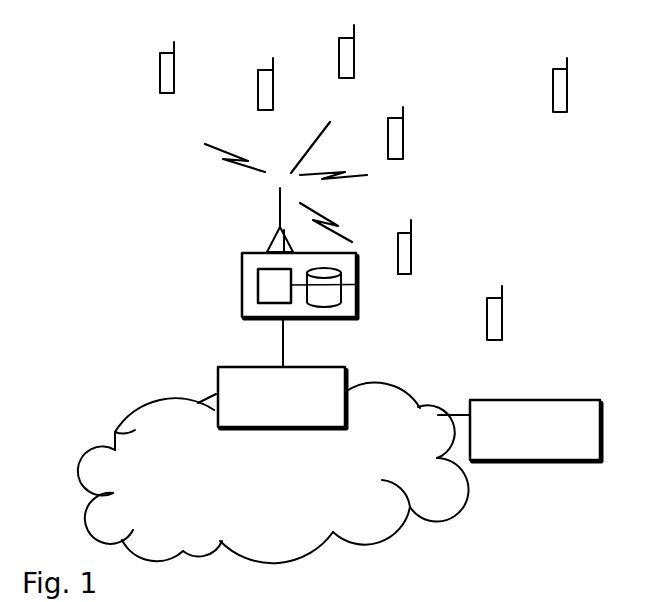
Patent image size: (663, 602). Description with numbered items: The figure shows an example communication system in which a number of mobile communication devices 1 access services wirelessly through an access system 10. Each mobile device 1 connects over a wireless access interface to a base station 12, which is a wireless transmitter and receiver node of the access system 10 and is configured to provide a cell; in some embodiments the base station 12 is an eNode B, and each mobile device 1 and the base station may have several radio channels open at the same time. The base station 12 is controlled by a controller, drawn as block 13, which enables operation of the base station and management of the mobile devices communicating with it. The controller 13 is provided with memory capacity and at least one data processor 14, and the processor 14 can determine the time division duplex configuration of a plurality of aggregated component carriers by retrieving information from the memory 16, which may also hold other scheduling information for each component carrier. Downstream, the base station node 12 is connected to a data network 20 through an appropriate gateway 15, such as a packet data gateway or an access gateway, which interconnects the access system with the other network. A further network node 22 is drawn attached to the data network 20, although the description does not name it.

The mobile communication device 1 is at (405, 253).
The access system 10 is at (136, 201).
The base station 12 is at (277, 222).
The controller 13 is at (242, 270).
The data processor 14 is at (258, 288).
The gateway 15 is at (218, 382).
The memory 16 is at (356, 284).
The data network 20 is at (113, 431).
The server 22 is at (555, 416).